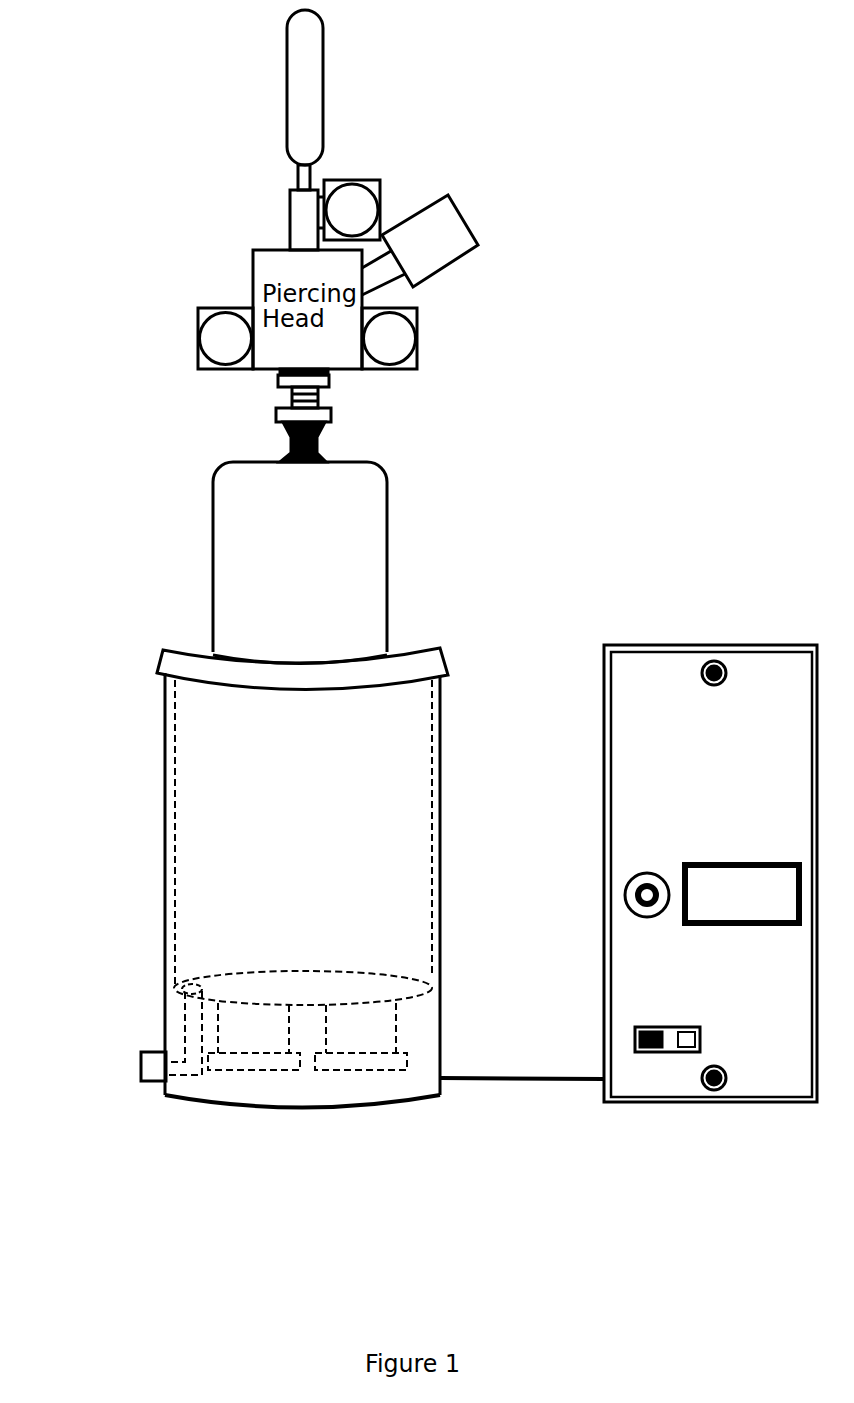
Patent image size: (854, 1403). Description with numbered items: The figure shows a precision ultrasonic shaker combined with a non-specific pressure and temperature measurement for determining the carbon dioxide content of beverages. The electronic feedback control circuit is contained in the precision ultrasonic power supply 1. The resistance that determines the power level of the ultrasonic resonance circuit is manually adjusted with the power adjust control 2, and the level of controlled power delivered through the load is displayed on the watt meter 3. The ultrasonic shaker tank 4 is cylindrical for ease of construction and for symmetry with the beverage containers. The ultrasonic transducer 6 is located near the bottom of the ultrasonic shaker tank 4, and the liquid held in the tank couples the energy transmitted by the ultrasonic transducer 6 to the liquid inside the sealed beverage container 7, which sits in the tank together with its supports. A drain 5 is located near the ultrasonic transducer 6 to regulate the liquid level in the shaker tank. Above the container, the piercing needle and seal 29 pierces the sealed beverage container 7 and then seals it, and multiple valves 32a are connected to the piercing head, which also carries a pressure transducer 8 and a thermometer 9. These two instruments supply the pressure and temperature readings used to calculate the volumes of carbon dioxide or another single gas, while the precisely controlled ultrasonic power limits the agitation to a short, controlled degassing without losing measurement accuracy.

The ultrasonic power supply 1 is at (645, 826).
The power adjust control 2 is at (571, 891).
The watt meter 3 is at (739, 862).
The ultrasonic shaker tank 4 is at (302, 878).
The drain 5 is at (112, 1032).
The ultrasonic transducer 6 is at (315, 1068).
The sealed beverage container 7 is at (300, 563).
The pressure transducer 8 is at (513, 243).
The thermometer 9 is at (192, 130).
The piercing needle and seal 29 is at (189, 415).
The valve 32a is at (310, 275).